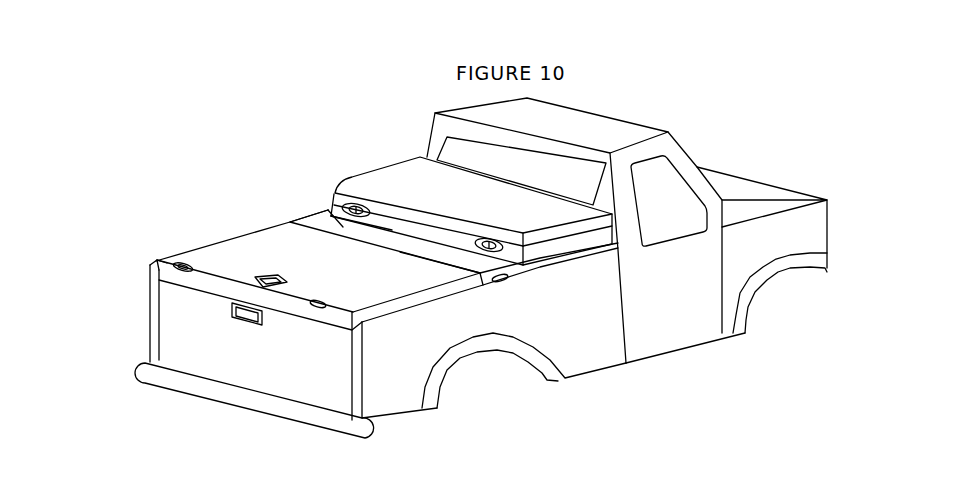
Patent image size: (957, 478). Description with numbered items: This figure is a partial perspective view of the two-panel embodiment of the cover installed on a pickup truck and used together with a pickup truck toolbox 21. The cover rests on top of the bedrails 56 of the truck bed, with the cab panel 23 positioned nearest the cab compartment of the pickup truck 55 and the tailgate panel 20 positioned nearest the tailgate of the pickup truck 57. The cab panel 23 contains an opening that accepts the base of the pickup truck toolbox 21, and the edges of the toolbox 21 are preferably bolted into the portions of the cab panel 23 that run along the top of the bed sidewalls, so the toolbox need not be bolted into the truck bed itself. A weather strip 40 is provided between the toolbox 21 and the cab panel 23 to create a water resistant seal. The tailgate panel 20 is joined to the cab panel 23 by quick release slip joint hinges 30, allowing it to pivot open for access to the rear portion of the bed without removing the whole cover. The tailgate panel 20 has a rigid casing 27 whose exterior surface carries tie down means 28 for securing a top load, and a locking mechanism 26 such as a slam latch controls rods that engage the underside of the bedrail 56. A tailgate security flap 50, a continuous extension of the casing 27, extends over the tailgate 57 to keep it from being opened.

The tailgate panel 20 is at (210, 242).
The pickup truck toolbox 21 is at (402, 172).
The cab panel 23 is at (312, 209).
The locking mechanism 26 is at (272, 278).
The rigid casing 27 is at (343, 227).
The tie down means 28 is at (167, 262).
The slip joint hinges 30 is at (448, 268).
The weather strip 40 is at (392, 230).
The tailgate security flap 50 is at (218, 290).
The cab compartment of the pickup truck 55 is at (569, 119).
The bedrail 56 is at (538, 302).
The tailgate of the pickup truck 57 is at (181, 312).